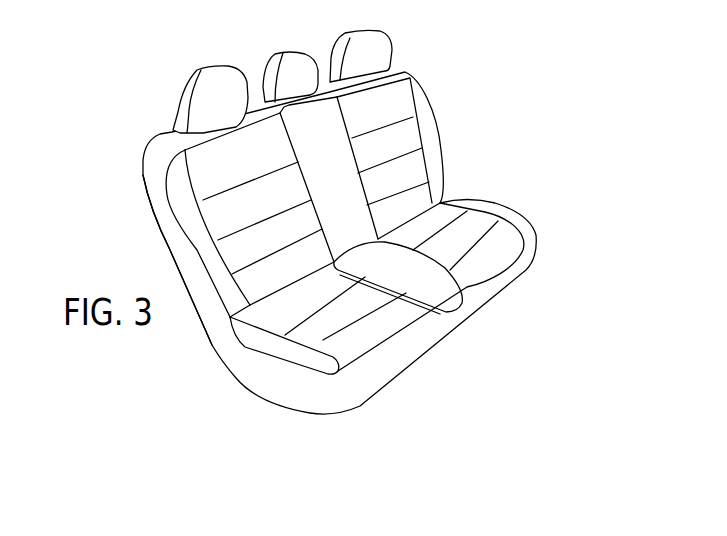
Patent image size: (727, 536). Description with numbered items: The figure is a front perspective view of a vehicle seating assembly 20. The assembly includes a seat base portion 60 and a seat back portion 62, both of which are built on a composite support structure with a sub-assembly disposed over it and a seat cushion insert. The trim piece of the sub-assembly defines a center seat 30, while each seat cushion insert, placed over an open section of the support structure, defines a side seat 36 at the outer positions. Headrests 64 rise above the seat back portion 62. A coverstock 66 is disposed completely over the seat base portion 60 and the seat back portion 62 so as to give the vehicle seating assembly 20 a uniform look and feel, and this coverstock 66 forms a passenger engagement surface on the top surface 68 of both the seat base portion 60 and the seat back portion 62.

The vehicle seating assembly 20 is at (457, 97).
The center seat 30 is at (437, 283).
The side seat 36 is at (471, 232).
The seat base portion 60 is at (277, 348).
The seat back portion 62 is at (181, 204).
The headrest 64 is at (185, 88).
The coverstock 66 is at (253, 165).
The top surface 68 is at (328, 318).